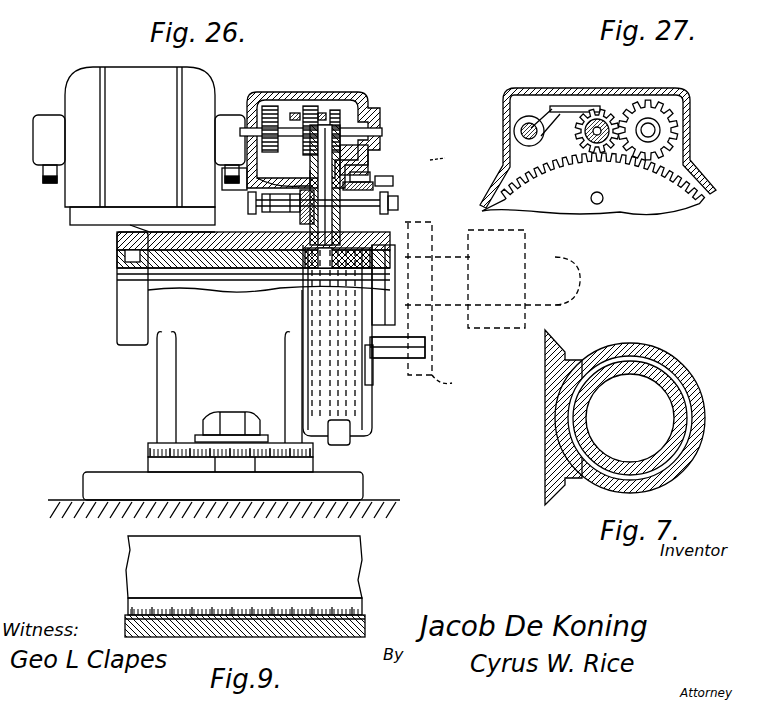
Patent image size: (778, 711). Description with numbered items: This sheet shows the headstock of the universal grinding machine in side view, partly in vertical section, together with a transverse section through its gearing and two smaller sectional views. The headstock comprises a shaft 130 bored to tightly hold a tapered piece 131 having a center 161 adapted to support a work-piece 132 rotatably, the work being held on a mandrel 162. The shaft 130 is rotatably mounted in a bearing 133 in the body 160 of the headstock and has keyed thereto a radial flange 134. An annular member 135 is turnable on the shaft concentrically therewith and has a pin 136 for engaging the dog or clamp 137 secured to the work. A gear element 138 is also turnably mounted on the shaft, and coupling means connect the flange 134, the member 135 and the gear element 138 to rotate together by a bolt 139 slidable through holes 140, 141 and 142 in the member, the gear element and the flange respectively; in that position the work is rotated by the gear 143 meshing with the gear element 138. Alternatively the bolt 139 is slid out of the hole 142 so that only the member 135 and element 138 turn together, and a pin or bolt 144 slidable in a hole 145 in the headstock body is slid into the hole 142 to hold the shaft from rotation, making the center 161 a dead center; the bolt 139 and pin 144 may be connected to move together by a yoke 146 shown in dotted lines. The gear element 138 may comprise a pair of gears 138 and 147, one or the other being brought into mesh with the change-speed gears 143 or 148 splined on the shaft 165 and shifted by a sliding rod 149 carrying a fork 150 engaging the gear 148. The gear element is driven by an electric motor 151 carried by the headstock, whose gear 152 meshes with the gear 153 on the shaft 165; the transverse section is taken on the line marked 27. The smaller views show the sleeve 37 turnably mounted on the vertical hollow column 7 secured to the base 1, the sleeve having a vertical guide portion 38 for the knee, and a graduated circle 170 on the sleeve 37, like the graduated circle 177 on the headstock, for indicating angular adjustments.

In FIG. 9, the base 1 is at (210, 637).
In FIG. 7, the vertical hollow column 7 is at (647, 375).
In FIG. 26, the belt 27 is at (330, 115).
In FIG. 7, the sleeve 37 is at (628, 344).
In FIG. 9, the sleeve 37 is at (244, 567).
In FIG. 7, the vertical guide portion 38 is at (546, 360).
In FIG. 26, the shaft 130 is at (398, 240).
In FIG. 26, the tapered piece 131 is at (186, 282).
In FIG. 26, the work-piece 132 is at (506, 325).
In FIG. 26, the bearing 133 is at (152, 262).
In FIG. 26, the radial flange 134 is at (302, 218).
In FIG. 26, the annular member 135 is at (375, 182).
In FIG. 26, the pin 136 is at (425, 350).
In FIG. 26, the dog or clamp 137 is at (452, 383).
In FIG. 26, the gear element 138 is at (368, 165).
In FIG. 27, the gear element 138 is at (600, 186).
In FIG. 26, the bolt 139 is at (398, 206).
In FIG. 26, the hole 140 is at (393, 180).
In FIG. 26, the hole 141 is at (370, 176).
In FIG. 27, the hole 141 is at (596, 204).
In FIG. 26, the hole 142 is at (280, 214).
In FIG. 26, the gear 143 is at (340, 112).
In FIG. 27, the gear 143 is at (606, 120).
In FIG. 26, the pin or bolt 144 is at (262, 200).
In FIG. 26, the hole 145 is at (230, 182).
In FIG. 26, the yoke 146 is at (395, 170).
In FIG. 26, the gear 147 is at (318, 262).
In FIG. 26, the change-speed gear 148 is at (309, 105).
In FIG. 27, the sliding rod 149 is at (531, 124).
In FIG. 26, the fork 150 is at (295, 113).
In FIG. 27, the fork 150 is at (562, 108).
In FIG. 26, the electric motor 151 is at (152, 138).
In FIG. 27, the gear 152 is at (684, 108).
In FIG. 26, the gear 153 is at (265, 110).
In FIG. 26, the body of the headstock 160 is at (195, 333).
In FIG. 26, the center 161 is at (398, 290).
In FIG. 26, the mandrel 162 is at (556, 262).
In FIG. 26, the shaft 165 is at (370, 128).
In FIG. 9, the graduated circle 170 is at (265, 597).
In FIG. 26, the graduated circle 177 is at (170, 448).